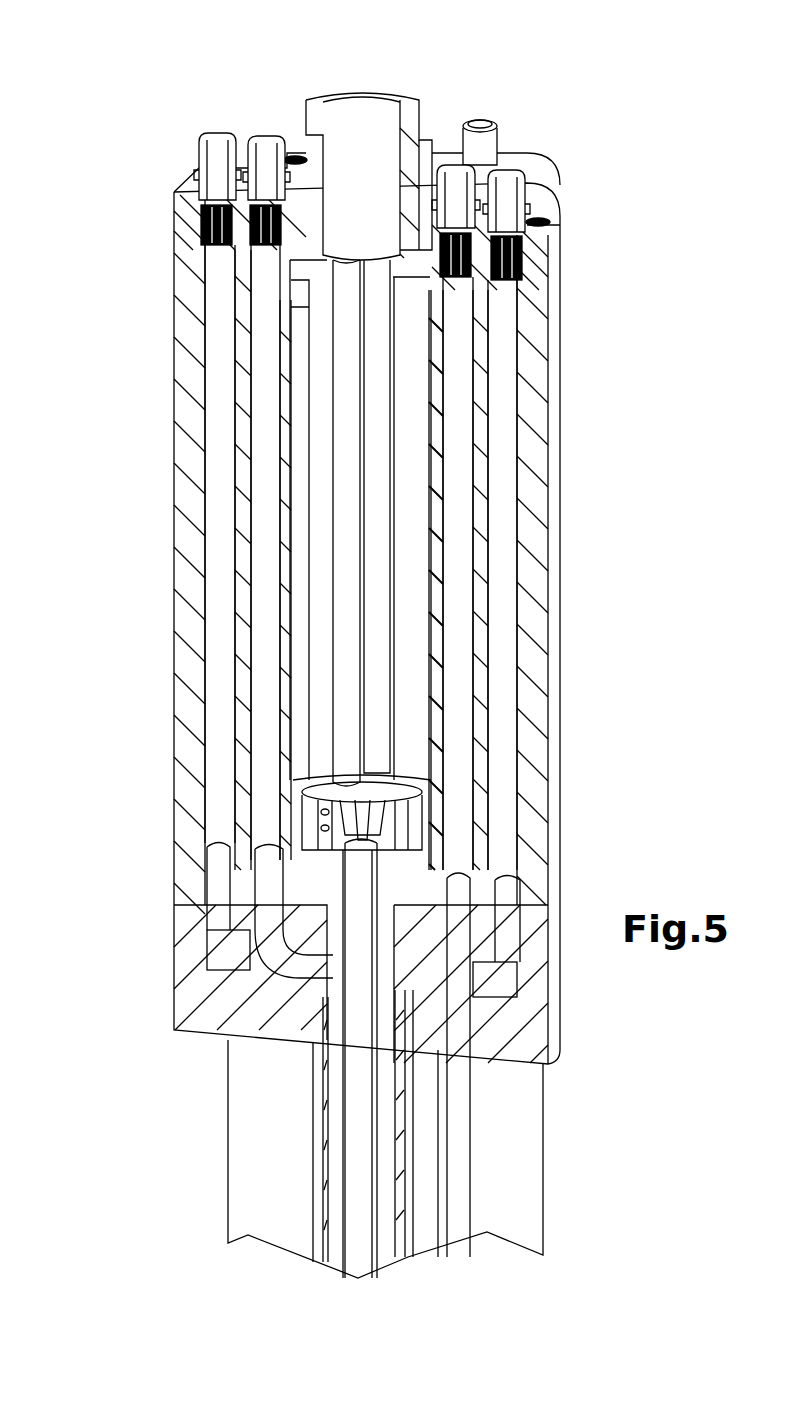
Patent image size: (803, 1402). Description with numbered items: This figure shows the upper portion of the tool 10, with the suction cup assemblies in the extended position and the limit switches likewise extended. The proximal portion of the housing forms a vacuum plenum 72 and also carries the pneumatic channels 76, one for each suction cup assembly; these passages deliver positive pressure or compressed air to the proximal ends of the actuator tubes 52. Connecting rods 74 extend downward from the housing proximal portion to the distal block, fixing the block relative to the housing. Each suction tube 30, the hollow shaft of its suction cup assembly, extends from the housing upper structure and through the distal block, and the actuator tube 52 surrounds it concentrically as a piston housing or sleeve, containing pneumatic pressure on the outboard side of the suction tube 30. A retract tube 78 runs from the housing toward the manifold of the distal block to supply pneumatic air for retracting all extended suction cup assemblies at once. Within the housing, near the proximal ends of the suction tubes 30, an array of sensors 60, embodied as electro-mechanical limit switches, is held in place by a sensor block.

The downhole tool assembly 10 is at (63, 145).
The vacuum plenum 72 is at (358, 120).
The pneumatic channel 76 is at (218, 124).
The sensor 60 is at (393, 805).
The connecting rod 74 is at (428, 1103).
The retract tube 78 is at (459, 1202).
The suction tube 30 is at (360, 1242).
The actuator tube 52 is at (268, 1092).